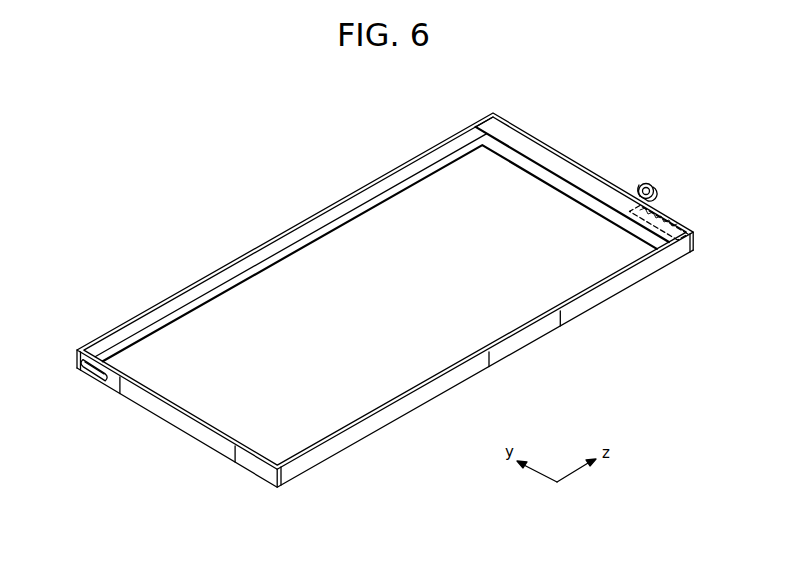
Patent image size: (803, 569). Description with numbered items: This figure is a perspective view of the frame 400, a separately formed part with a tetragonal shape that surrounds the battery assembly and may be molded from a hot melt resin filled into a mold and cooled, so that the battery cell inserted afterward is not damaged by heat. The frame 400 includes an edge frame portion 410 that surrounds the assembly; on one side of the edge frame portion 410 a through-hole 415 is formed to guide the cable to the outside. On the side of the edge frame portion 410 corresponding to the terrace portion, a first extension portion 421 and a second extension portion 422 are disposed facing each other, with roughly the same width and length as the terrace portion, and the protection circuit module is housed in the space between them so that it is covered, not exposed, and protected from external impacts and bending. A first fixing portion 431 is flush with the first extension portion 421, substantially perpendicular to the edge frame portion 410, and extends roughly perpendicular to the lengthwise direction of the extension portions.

The frame 400 is at (645, 105).
The edge frame portion 410 is at (455, 377).
The through-hole 415 is at (666, 212).
The first extension portion 421 is at (580, 193).
The second extension portion 422 is at (562, 157).
The first fixing portion 431 is at (267, 267).